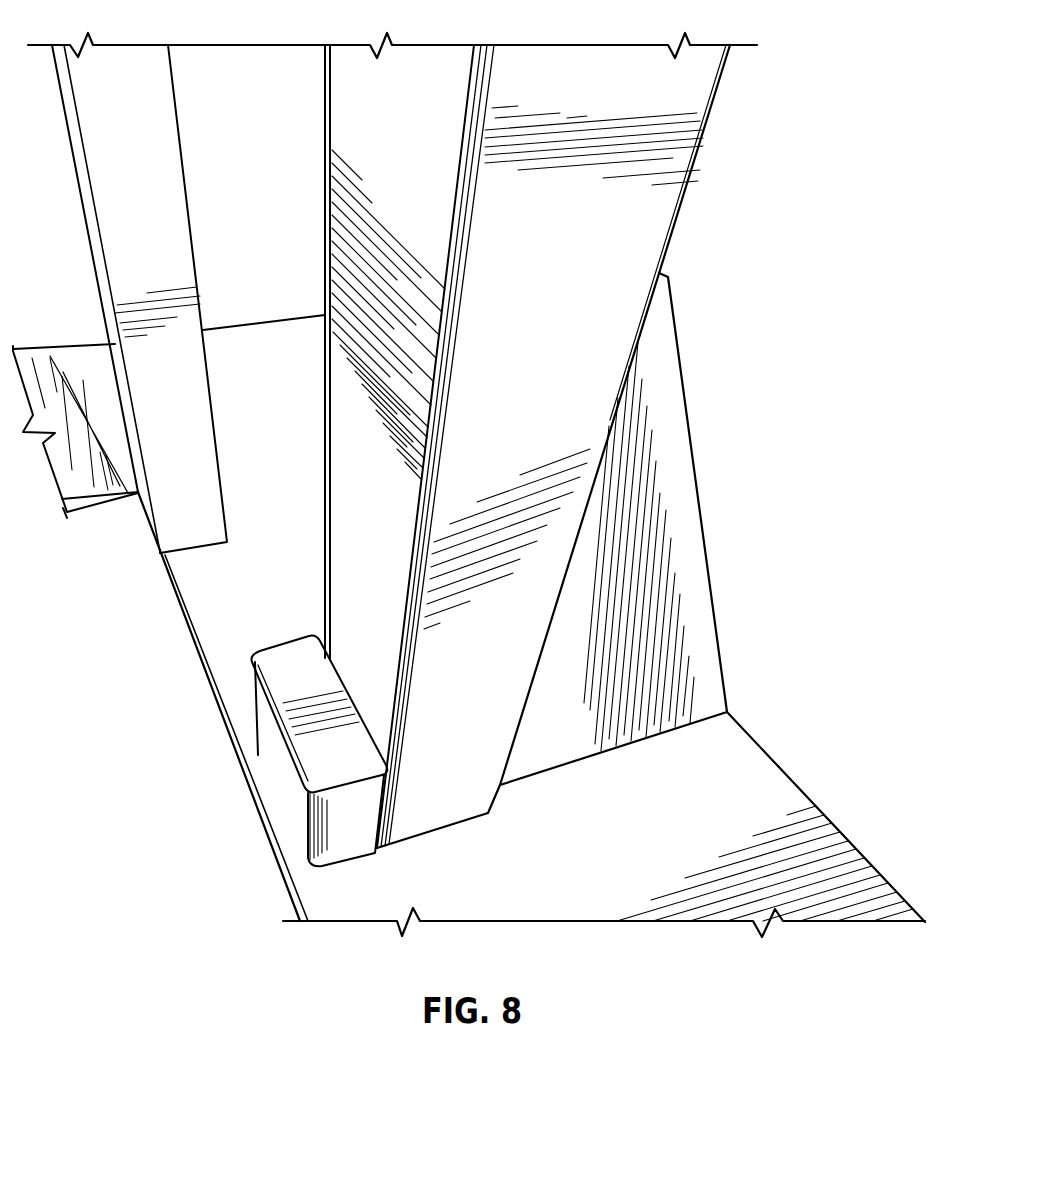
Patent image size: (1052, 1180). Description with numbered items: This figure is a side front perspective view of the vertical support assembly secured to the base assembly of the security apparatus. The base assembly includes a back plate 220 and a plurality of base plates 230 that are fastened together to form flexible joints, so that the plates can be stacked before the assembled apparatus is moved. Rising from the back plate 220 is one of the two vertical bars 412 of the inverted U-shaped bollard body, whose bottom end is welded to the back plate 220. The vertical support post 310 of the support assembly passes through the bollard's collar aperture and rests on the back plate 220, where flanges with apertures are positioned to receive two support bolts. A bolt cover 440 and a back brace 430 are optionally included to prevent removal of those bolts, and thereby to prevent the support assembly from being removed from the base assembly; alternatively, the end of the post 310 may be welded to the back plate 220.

The vertical bar 412 is at (117, 190).
The base plate 230 is at (65, 358).
The vertical support post 310 is at (658, 227).
The back brace 430 is at (680, 520).
The bolt cover 440 is at (288, 770).
The back plate 220 is at (793, 785).